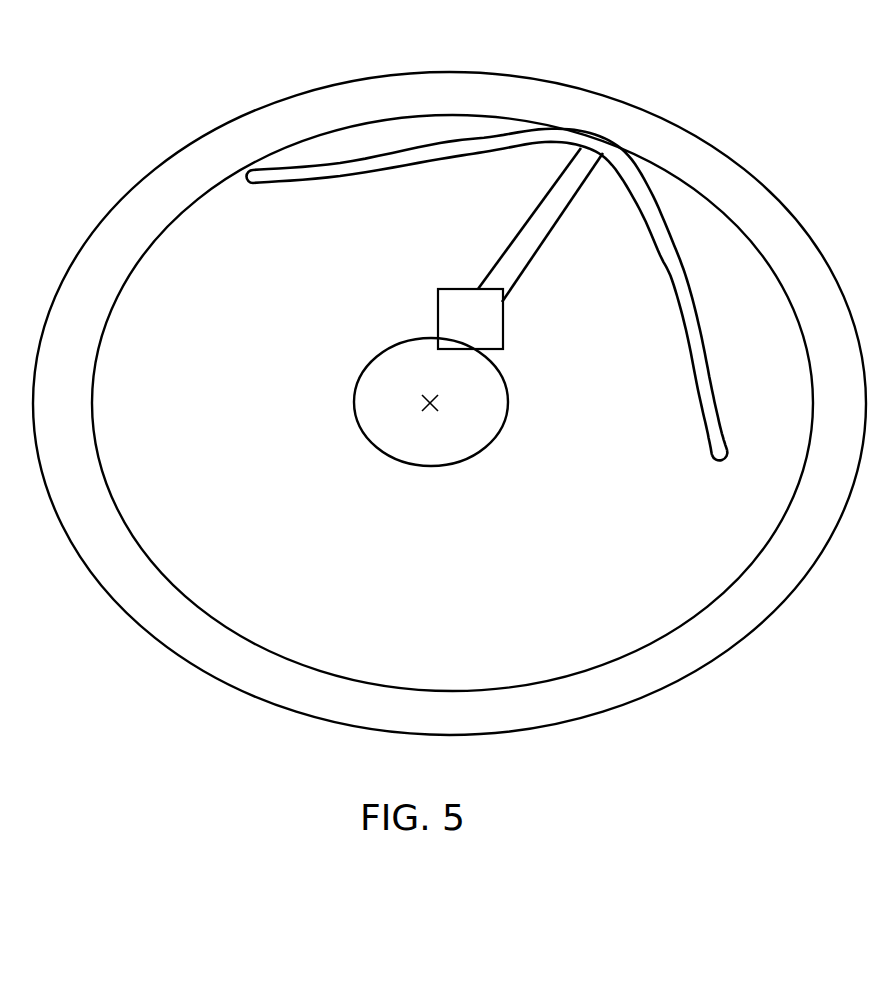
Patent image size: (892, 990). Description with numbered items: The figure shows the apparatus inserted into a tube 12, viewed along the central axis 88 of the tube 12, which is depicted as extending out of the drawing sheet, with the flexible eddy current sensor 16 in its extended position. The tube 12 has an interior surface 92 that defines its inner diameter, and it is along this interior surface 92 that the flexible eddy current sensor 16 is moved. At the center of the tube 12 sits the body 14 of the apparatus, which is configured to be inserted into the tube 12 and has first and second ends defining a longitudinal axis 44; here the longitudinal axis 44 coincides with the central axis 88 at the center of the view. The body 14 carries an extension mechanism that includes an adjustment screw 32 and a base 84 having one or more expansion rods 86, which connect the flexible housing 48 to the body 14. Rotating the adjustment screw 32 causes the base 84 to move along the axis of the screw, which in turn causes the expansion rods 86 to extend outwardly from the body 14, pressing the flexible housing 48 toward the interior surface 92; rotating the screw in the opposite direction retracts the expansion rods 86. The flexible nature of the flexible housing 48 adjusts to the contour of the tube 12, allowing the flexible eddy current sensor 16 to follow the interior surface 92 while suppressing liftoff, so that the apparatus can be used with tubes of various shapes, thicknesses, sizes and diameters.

The tube 12 is at (135, 108).
The interior surface 92 is at (130, 278).
The flexible eddy current sensor 16 is at (487, 295).
The flexible housing 48 is at (684, 330).
The expansion rod 86 is at (525, 248).
The base 84 is at (483, 325).
The body 14 is at (419, 379).
The adjustment screw 32 is at (475, 433).
The central axis 88 is at (351, 408).
The longitudinal axis 44 is at (421, 403).